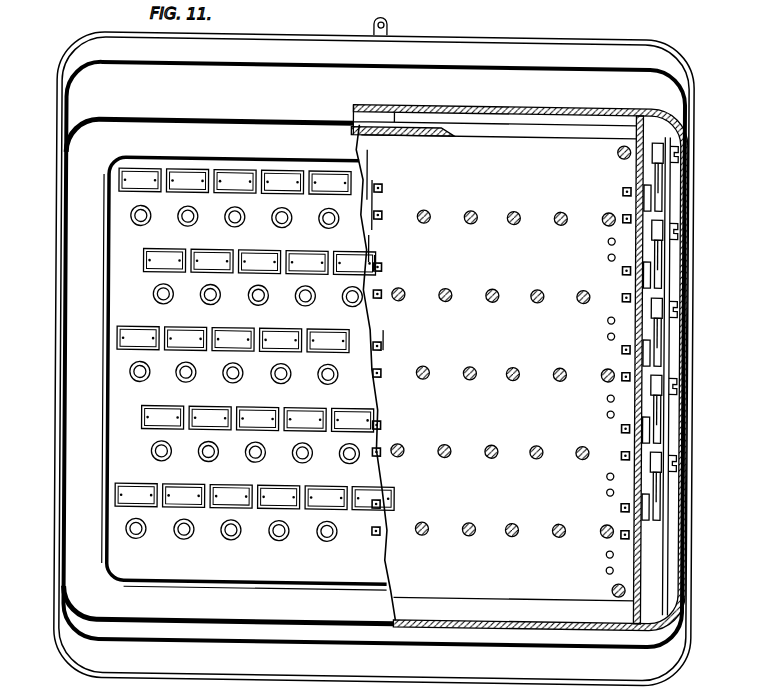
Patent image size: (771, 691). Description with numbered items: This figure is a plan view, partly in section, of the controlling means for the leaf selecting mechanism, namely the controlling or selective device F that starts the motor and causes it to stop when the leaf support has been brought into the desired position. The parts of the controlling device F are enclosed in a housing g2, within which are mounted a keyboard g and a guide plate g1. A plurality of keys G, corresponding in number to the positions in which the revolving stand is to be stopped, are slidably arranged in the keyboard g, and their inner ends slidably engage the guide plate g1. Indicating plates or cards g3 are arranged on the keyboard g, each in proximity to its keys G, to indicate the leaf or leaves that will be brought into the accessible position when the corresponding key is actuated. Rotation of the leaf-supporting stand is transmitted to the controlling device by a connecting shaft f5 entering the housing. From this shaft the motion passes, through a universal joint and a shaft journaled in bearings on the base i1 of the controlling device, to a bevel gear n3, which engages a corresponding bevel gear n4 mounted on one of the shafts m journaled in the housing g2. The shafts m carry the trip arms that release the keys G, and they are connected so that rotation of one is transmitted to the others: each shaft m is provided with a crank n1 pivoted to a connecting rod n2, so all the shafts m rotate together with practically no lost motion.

The controlling device F is at (361, 358).
The shaft f5 is at (385, 28).
The keyboard g is at (246, 373).
The guide plate g1 is at (494, 374).
The housing g2 is at (374, 354).
The indicating plates g3 is at (222, 174).
The keys G is at (148, 226).
The cranks n1 is at (652, 176).
The connecting rod n2 is at (665, 418).
The bevel gear n3 is at (440, 123).
The bevel gear n4 is at (450, 132).
The shafts m is at (643, 352).
The base i1 is at (659, 585).